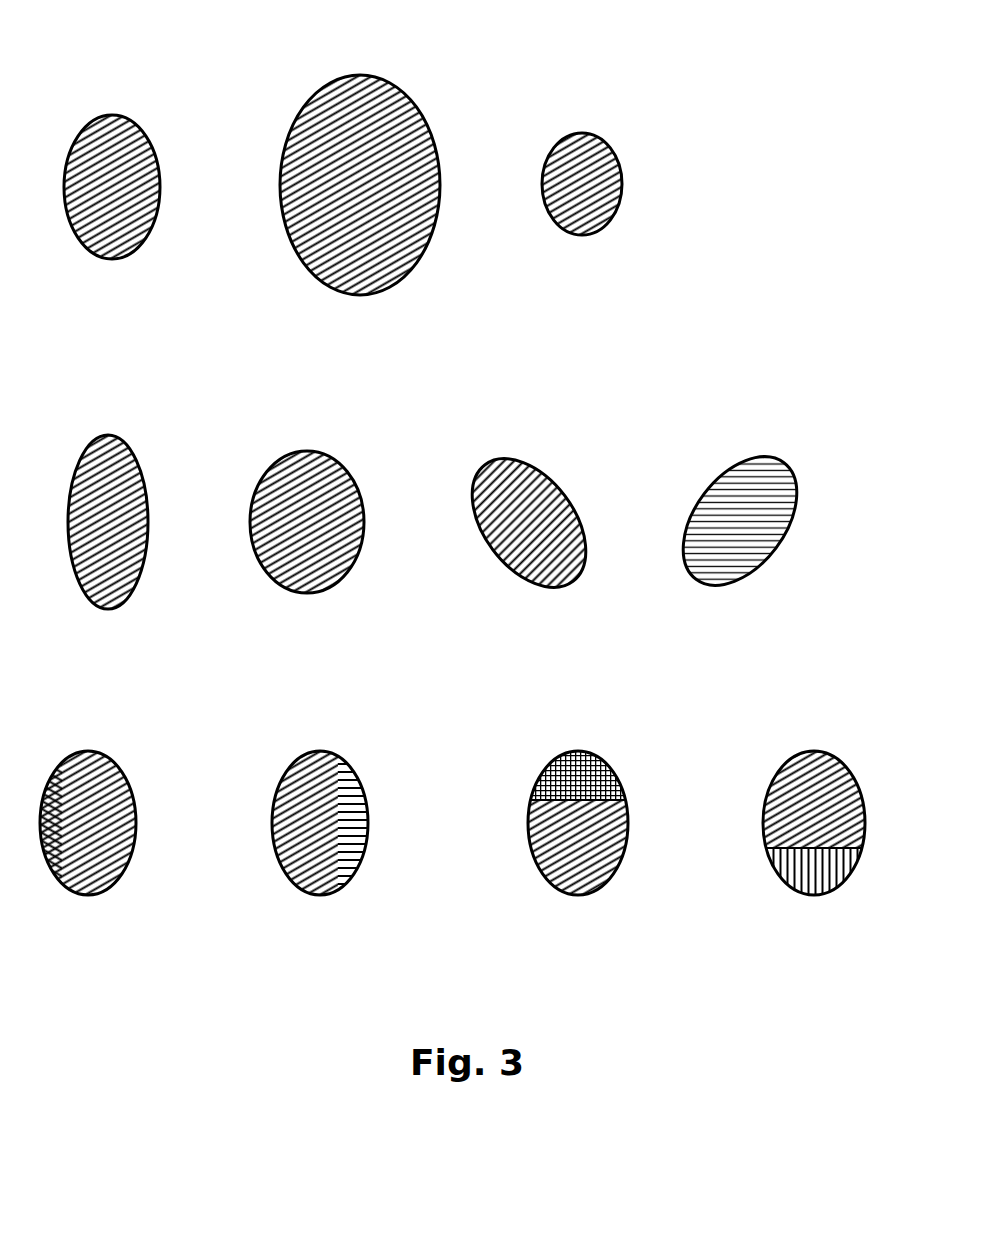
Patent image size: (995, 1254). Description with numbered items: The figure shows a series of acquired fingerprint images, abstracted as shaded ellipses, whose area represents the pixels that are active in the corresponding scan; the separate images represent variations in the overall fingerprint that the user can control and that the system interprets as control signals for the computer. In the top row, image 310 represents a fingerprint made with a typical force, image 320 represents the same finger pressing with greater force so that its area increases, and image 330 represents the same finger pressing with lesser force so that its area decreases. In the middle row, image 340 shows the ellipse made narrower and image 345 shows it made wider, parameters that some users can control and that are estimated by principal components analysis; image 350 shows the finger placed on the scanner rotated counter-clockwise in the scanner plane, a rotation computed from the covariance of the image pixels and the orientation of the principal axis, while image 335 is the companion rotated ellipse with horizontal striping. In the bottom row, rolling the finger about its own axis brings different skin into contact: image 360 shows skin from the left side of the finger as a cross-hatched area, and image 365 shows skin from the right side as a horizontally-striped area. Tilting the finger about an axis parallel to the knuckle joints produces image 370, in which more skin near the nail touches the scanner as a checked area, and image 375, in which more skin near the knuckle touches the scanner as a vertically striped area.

The fingerprint image with typical force 310 is at (138, 243).
The fingerprint image with greater force 320 is at (425, 275).
The fingerprint image with lesser force 330 is at (605, 222).
The tilted oval with horizontal hatching 335 is at (742, 580).
The narrower aspect ratio fingerprint image 340 is at (137, 578).
The wider aspect ratio fingerprint image 345 is at (345, 578).
The counter-clockwise rotated fingerprint image 350 is at (575, 578).
The left-side skin fingerprint image 360 is at (125, 875).
The right-side skin fingerprint image 365 is at (355, 875).
The nail-side skin fingerprint image 370 is at (615, 875).
The knuckle-side skin fingerprint image 375 is at (850, 875).